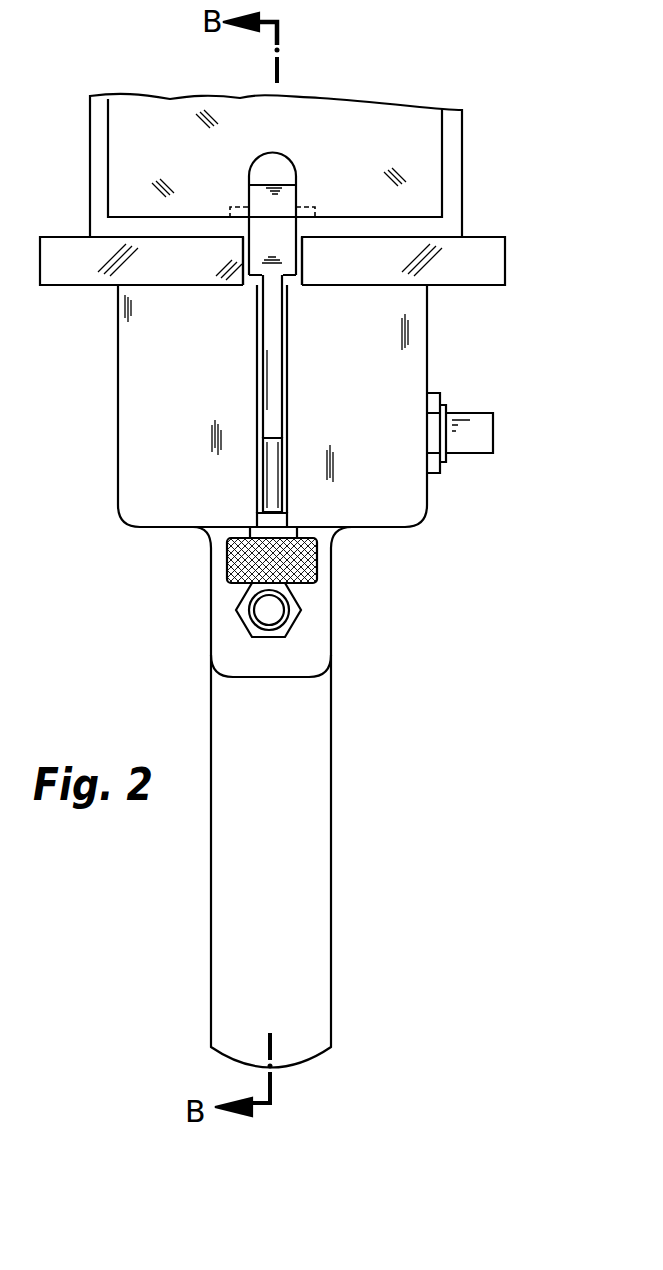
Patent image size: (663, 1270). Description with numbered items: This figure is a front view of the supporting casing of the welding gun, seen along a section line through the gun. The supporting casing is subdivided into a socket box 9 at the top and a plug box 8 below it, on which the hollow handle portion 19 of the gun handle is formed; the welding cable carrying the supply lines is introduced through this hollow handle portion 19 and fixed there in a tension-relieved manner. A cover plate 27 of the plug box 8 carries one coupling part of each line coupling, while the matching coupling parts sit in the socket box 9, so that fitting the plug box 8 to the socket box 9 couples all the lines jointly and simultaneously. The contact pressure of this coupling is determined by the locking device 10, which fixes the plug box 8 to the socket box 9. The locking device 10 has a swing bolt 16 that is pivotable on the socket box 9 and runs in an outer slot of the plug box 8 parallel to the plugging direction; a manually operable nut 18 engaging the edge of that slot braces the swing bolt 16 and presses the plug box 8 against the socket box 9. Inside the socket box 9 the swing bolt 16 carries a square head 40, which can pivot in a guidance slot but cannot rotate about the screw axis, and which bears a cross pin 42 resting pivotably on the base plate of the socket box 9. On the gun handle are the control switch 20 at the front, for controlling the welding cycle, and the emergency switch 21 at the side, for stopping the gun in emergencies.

The plug box 8 is at (407, 500).
The socket box 9 is at (453, 172).
The locking device 10 is at (272, 360).
The swing bolt 16 is at (270, 467).
The manually operable nut 18 is at (243, 570).
The hollow handle portion 19 is at (303, 858).
The control switch 20 is at (281, 608).
The emergency switch 21 is at (480, 430).
The cover plate 27 is at (477, 278).
The square head 40 is at (285, 192).
The cross pin 42 is at (232, 205).